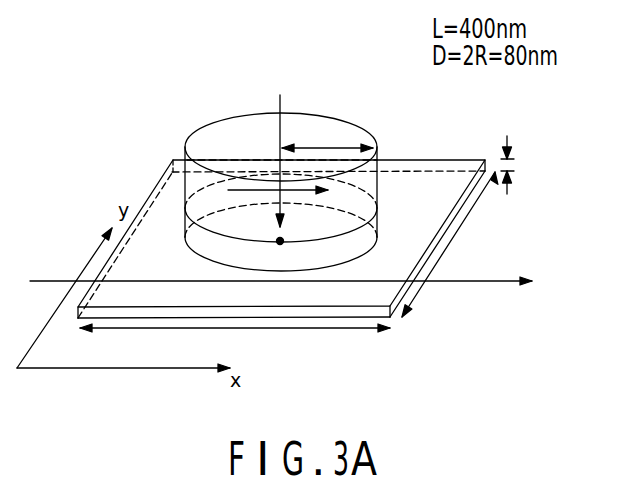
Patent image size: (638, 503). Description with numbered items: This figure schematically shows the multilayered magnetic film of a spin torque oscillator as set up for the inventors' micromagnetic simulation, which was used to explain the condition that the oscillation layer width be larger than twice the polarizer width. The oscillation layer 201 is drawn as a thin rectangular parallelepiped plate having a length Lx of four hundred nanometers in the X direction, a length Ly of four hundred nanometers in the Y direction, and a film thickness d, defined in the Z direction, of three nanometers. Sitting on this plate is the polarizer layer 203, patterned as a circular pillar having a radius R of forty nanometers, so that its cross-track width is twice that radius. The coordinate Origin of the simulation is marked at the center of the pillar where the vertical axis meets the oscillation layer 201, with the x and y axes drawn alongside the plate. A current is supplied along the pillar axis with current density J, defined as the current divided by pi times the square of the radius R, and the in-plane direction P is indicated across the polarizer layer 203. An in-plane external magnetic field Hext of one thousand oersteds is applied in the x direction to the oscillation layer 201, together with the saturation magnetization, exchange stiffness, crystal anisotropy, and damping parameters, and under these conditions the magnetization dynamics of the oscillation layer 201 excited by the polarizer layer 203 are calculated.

The oscillation layer 201 is at (430, 160).
The polarizer layer 203 is at (228, 118).
The origin Origin is at (278, 239).
The current density J is at (274, 161).
The radius R is at (327, 136).
The spin polarization direction P is at (287, 192).
The film thickness d is at (515, 165).
The length in the X direction Lx is at (235, 342).
The length in the Y direction Ly is at (450, 244).
The in-plane external magnetic field Hext is at (307, 283).